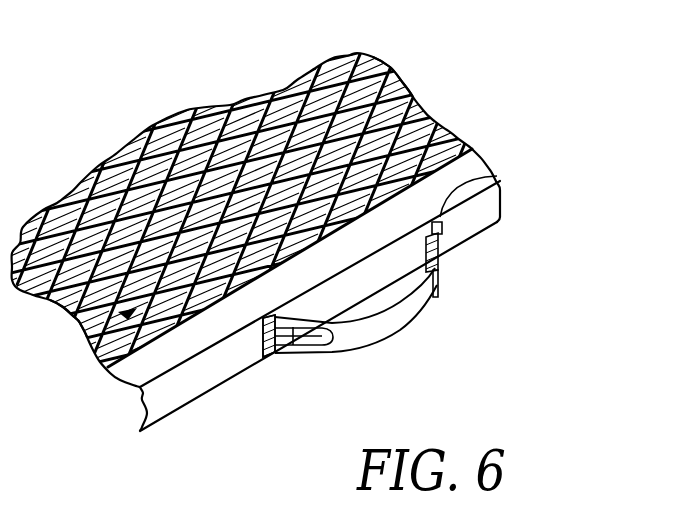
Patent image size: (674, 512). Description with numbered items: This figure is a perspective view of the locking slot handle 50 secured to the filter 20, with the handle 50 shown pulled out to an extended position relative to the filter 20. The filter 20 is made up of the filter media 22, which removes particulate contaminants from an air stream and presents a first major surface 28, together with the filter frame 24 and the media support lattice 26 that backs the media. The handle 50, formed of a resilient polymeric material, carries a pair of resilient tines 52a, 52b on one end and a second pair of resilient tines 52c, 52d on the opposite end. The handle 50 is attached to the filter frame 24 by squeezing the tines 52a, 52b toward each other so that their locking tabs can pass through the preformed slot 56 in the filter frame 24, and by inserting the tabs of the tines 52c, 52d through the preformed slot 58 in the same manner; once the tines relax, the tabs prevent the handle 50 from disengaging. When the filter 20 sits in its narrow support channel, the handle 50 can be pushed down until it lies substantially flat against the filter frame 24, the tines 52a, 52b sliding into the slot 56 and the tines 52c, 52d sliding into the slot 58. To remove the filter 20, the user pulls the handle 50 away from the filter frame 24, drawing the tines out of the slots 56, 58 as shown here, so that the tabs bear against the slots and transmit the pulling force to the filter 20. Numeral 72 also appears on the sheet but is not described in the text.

The filter 20 is at (470, 119).
The filter media 22 is at (340, 125).
The filter frame 24 is at (160, 357).
The media support lattice 26 is at (403, 80).
The first major surface 28 is at (72, 315).
The locking slot handle 50 is at (417, 318).
The resilient tine 52a is at (299, 350).
The resilient tine 52b is at (317, 348).
The resilient tine 52c is at (437, 215).
The resilient tine 52d is at (442, 257).
The preformed slot 56 is at (275, 355).
The preformed slot 58 is at (443, 236).
The reference element 72 is at (0, 487).